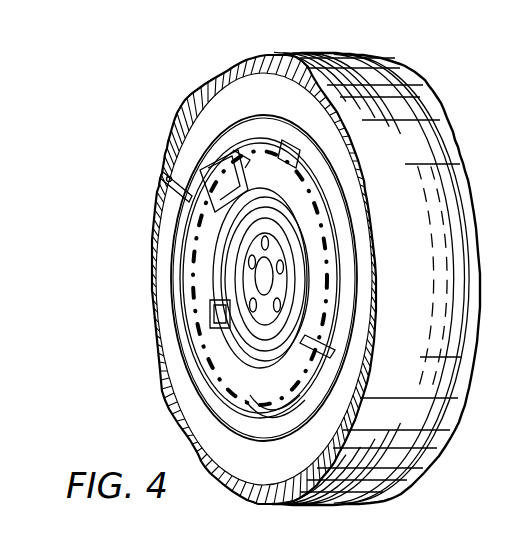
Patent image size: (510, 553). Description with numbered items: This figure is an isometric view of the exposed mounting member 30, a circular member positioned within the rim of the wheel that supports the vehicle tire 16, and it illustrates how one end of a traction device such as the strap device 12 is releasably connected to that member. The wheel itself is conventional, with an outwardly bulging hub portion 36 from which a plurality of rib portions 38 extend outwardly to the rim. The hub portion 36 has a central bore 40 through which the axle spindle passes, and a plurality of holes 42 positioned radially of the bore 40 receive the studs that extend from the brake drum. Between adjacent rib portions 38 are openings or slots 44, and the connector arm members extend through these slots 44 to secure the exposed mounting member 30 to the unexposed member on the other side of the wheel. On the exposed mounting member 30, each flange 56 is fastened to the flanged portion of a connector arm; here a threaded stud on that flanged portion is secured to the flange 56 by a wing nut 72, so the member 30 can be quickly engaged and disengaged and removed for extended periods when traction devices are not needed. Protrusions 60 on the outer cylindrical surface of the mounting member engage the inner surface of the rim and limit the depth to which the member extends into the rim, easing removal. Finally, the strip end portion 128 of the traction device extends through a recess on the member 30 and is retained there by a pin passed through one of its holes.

The vehicle tire 16 is at (320, 55).
The strap device 12 is at (173, 123).
The exposed mounting member 30 is at (185, 198).
The hub portion 36 is at (195, 352).
The openings or slots 44 is at (222, 185).
The rib portions 38 is at (183, 246).
The holes 42 is at (330, 212).
The central bore 40 is at (290, 256).
The flange 56 is at (200, 162).
The strip end portion 128 is at (170, 183).
The protrusions 60 is at (290, 150).
The wing nut 72 is at (330, 345).